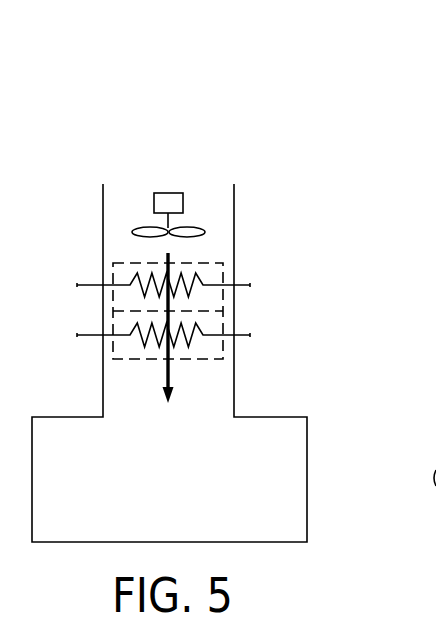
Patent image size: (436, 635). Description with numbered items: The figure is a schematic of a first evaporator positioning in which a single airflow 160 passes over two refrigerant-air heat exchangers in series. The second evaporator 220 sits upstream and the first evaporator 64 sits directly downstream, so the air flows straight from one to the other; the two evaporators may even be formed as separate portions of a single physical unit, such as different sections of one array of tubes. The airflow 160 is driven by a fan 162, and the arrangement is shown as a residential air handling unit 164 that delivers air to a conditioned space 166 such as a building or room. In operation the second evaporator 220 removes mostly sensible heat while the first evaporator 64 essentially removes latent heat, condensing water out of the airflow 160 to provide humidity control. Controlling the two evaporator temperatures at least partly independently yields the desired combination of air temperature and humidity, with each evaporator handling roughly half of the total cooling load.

The first evaporator 64 is at (142, 373).
The airflow 160 is at (172, 371).
The fan 162 is at (203, 197).
The residential air handling unit 164 is at (243, 400).
The conditioned space 166 is at (192, 488).
The second evaporator 220 is at (232, 255).